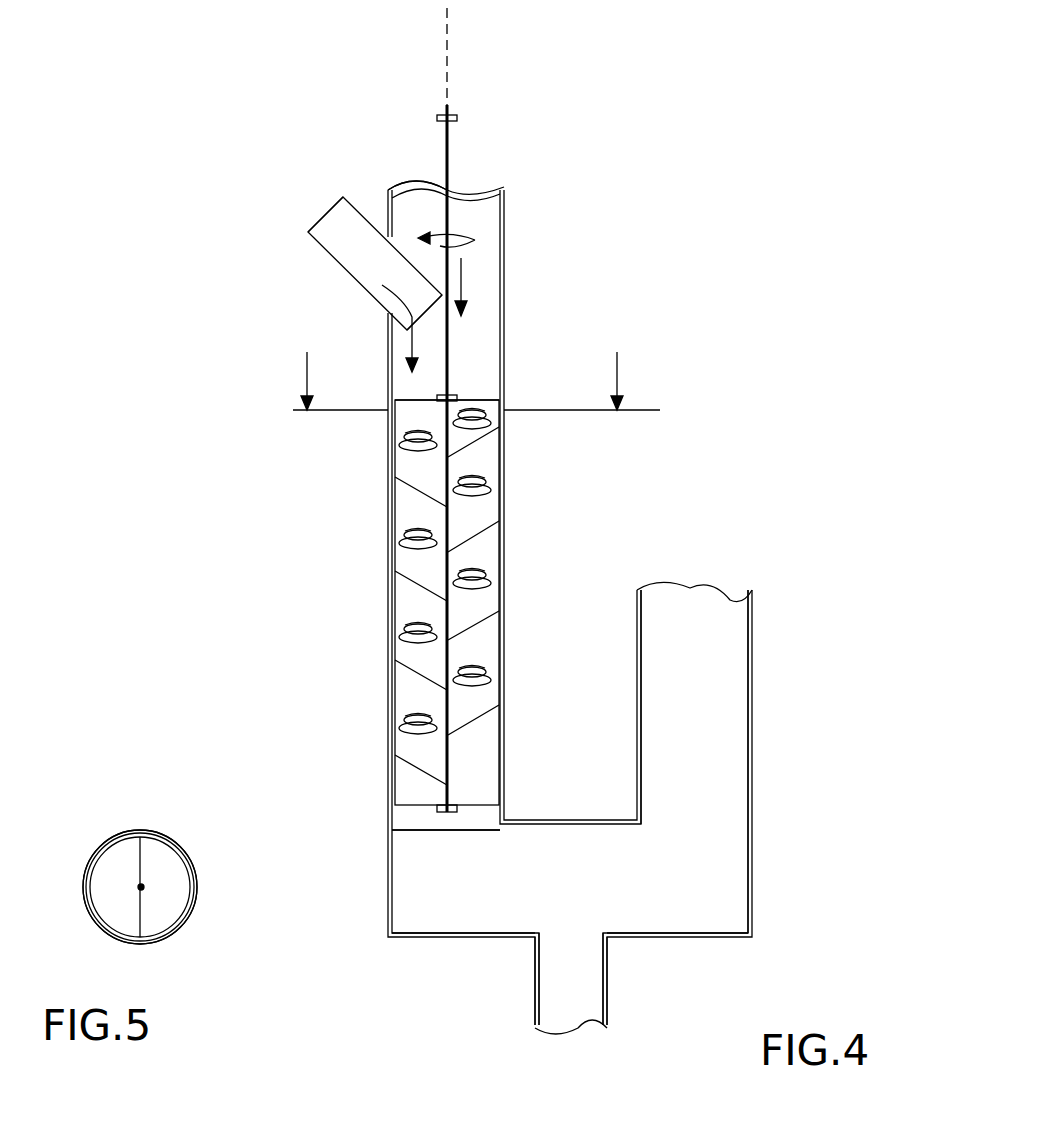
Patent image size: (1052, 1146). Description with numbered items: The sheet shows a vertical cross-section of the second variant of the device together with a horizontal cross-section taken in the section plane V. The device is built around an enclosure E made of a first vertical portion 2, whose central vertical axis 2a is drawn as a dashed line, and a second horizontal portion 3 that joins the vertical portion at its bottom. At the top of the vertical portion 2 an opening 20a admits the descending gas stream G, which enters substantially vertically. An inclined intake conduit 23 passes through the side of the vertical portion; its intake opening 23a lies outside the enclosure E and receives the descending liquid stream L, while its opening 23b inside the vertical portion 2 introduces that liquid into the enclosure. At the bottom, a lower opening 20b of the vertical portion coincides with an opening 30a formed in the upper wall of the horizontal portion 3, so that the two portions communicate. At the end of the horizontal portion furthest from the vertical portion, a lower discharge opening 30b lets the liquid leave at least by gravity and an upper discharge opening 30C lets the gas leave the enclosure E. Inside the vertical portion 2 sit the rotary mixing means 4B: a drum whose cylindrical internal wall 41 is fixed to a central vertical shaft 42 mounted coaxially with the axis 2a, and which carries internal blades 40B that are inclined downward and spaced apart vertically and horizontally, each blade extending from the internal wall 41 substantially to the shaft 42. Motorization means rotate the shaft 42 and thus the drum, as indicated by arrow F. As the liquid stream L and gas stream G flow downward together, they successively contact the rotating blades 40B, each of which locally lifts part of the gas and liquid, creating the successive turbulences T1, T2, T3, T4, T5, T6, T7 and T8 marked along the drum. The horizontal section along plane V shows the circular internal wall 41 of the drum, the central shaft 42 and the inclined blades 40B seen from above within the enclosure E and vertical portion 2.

In FIG. 4, the first vertical portion 2 is at (365, 710).
In FIG. 4, the central vertical axis 2a is at (452, 42).
In FIG. 4, the second horizontal portion 3 is at (690, 952).
In FIG. 4, the mixing means 4B is at (496, 387).
In FIG. 4, the opening 20a is at (417, 186).
In FIG. 4, the lower opening 20b is at (457, 845).
In FIG. 4, the intake conduit 23 is at (348, 248).
In FIG. 4, the intake opening 23a is at (338, 230).
In FIG. 4, the opening 23b is at (405, 327).
In FIG. 4, the opening 30a is at (415, 926).
In FIG. 4, the lower discharge opening 30b is at (567, 937).
In FIG. 4, the upper discharge opening 30C is at (687, 782).
In FIG. 4, the internal blades 40B is at (507, 402).
In FIG. 5, the internal blades 40B is at (112, 875).
In FIG. 4, the cylindrical internal wall of the drum 41 is at (478, 806).
In FIG. 5, the cylindrical internal wall of the drum 41 is at (165, 940).
In FIG. 4, the central vertical shaft 42 is at (448, 470).
In FIG. 5, the central vertical shaft 42 is at (145, 885).
In FIG. 4, the enclosure E is at (504, 332).
In FIG. 5, the enclosure E is at (110, 934).
In FIG. 4, the turbulence T1 is at (472, 400).
In FIG. 4, the turbulence T2 is at (397, 445).
In FIG. 4, the turbulence T3 is at (497, 490).
In FIG. 4, the turbulence T4 is at (397, 540).
In FIG. 4, the turbulence T5 is at (497, 583).
In FIG. 4, the turbulence T6 is at (397, 633).
In FIG. 4, the turbulence T7 is at (497, 675).
In FIG. 4, the turbulence T8 is at (423, 738).
In FIG. 4, the arrow of rotation F is at (462, 238).
In FIG. 4, the descending gas stream G is at (472, 287).
In FIG. 4, the descending liquid stream L is at (400, 324).
In FIG. 4, the horizontal section plane V is at (476, 365).